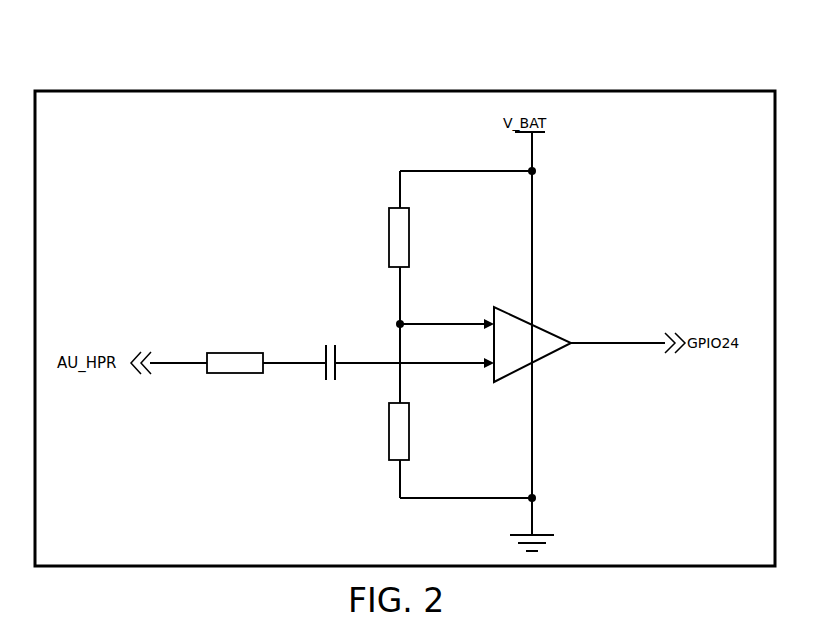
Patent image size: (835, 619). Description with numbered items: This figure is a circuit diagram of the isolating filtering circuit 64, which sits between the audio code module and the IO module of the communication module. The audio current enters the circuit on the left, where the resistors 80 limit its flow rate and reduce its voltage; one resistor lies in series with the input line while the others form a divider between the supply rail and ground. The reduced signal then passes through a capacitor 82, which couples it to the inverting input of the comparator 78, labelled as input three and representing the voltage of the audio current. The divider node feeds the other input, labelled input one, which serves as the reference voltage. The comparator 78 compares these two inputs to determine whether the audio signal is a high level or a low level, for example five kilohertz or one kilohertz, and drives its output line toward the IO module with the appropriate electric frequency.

The isolating filtering circuit 64 is at (573, 85).
The comparator 78 is at (545, 326).
The resistors 80 is at (389, 222).
The capacitor 82 is at (320, 374).